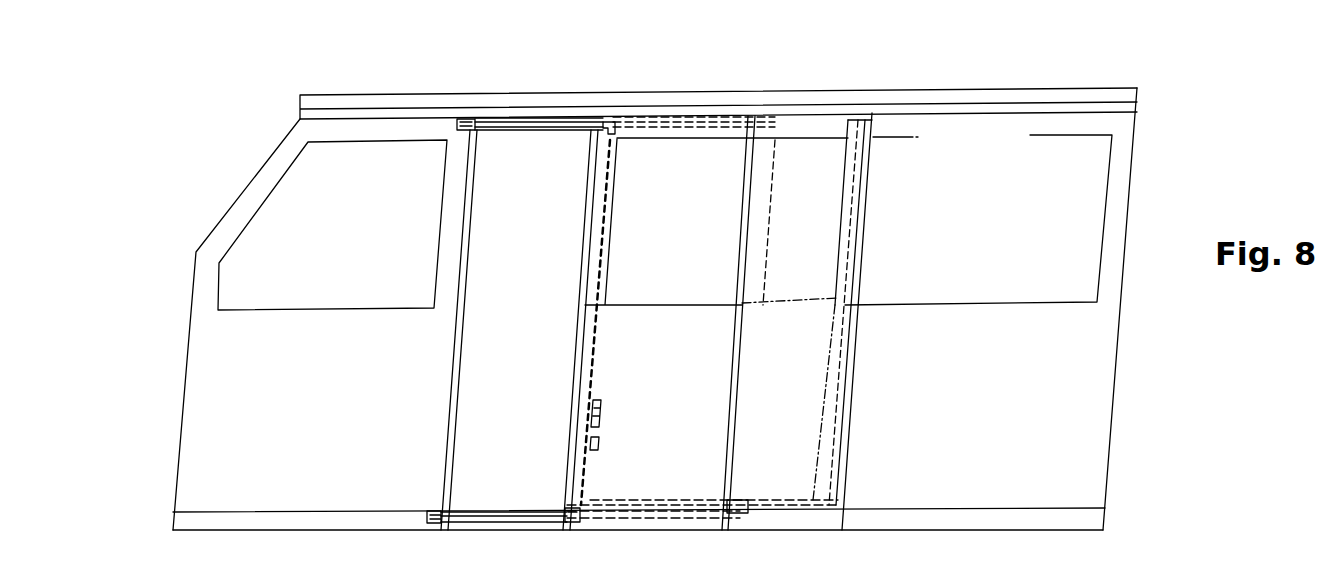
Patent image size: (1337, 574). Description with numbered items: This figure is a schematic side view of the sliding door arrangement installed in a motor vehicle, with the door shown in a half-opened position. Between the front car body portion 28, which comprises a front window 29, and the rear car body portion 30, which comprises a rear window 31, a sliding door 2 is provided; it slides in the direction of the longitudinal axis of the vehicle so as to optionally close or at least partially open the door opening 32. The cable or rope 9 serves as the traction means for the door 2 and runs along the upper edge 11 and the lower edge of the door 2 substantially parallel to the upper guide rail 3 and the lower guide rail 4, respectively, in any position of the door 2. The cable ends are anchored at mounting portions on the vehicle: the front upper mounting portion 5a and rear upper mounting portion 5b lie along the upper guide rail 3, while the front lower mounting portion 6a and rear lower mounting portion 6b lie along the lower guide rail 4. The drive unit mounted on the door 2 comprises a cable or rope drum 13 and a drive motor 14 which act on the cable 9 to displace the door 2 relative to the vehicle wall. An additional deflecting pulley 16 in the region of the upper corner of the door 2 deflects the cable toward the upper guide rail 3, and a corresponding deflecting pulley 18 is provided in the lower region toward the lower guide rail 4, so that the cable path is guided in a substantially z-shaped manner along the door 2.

The sliding door 2 is at (823, 365).
The upper guide rail 3 is at (560, 118).
The lower guide rail 4 is at (492, 510).
The front upper mounting portion 5a is at (458, 127).
The rear upper mounting portion 5b is at (755, 127).
The front lower mounting portion 6a is at (424, 513).
The rear lower mounting portion 6b is at (741, 502).
The cable or rope 9 is at (597, 323).
The upper edge of the door 11 is at (847, 122).
The cable or rope drum 13 is at (601, 412).
The drive motor 14 is at (602, 442).
The additional deflecting pulley 16 is at (617, 118).
The deflecting pulley 18 is at (578, 513).
The front car body portion 28 is at (150, 295).
The front window 29 is at (278, 213).
The rear car body portion 30 is at (1233, 70).
The rear window 31 is at (1097, 193).
The door opening 32 is at (508, 150).